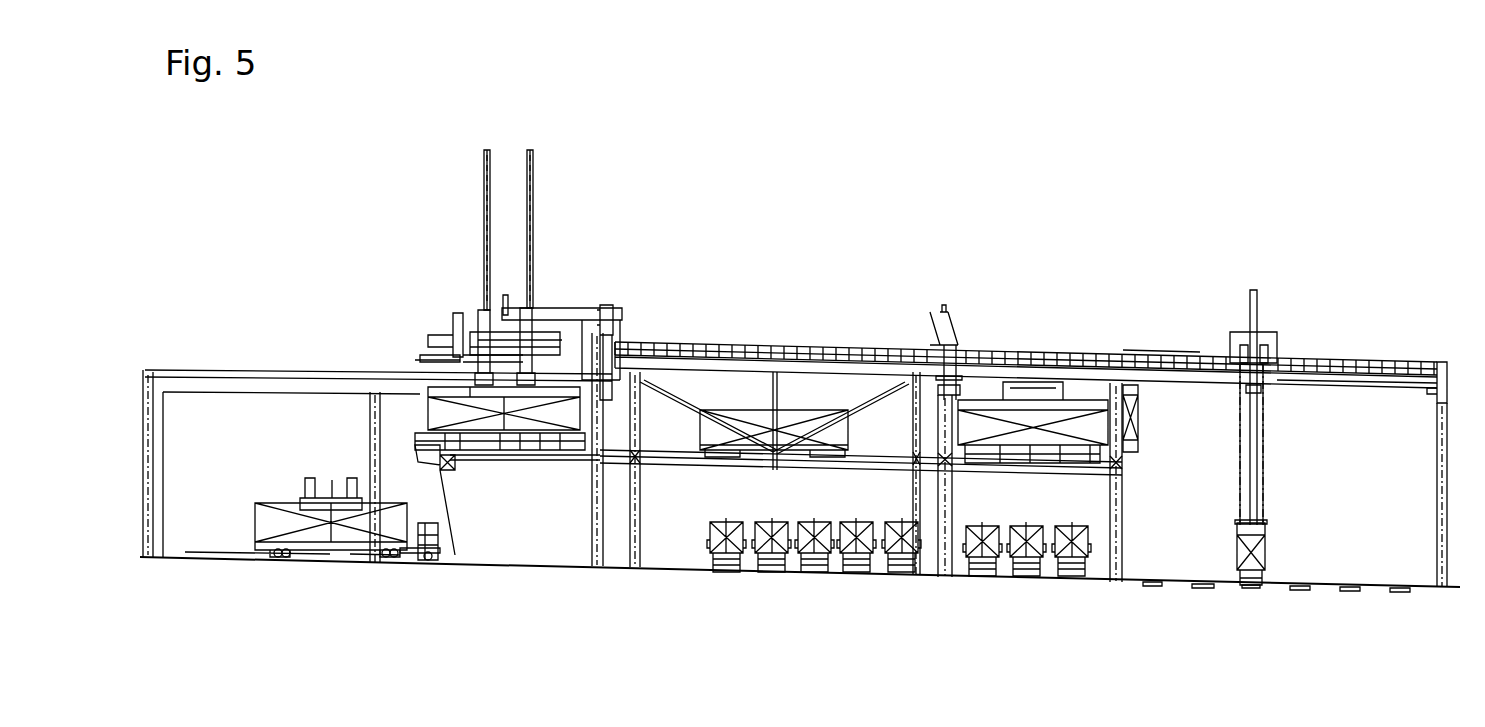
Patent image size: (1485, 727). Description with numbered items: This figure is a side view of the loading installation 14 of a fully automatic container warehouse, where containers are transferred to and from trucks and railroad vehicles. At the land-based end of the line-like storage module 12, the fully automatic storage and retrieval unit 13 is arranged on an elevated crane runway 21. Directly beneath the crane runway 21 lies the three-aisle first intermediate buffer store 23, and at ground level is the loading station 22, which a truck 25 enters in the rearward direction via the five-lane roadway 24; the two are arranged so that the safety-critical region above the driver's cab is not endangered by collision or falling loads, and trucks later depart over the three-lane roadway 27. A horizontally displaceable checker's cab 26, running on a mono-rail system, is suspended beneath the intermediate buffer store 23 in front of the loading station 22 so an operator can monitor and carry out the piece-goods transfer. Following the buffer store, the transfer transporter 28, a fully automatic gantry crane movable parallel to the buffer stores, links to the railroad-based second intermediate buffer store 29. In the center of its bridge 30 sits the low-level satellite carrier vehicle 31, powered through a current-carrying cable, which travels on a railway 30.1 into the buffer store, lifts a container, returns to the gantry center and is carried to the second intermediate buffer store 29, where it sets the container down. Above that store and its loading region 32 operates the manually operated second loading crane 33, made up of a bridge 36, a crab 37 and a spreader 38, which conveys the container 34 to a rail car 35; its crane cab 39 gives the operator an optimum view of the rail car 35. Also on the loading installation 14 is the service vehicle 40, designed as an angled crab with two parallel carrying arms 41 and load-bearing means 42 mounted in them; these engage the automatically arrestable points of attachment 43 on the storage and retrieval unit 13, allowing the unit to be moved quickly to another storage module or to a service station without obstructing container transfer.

The storage module 12 is at (156, 358).
The storage and retrieval unit 13 is at (426, 353).
The loading installation 14 is at (708, 196).
The crane runway 21 is at (263, 370).
The loading station 22 is at (223, 560).
The first intermediate buffer store 23 is at (522, 443).
The roadway 24 is at (777, 572).
The truck 25 is at (412, 555).
The checker's cab 26 is at (427, 467).
The three-lane roadway 27 is at (1053, 577).
The transfer transporter 28 is at (824, 337).
The second intermediate buffer store 29 is at (1077, 457).
The bridge 30 is at (787, 363).
The railway 30.1 is at (888, 457).
The satellite carrier vehicle 31 is at (722, 443).
The loading region 32 is at (1327, 588).
The second loading crane 33 is at (1127, 350).
The container 34 is at (1238, 563).
The rail car 35 is at (1257, 572).
The bridge 36 is at (1330, 380).
The crab 37 is at (1267, 340).
The spreader 38 is at (1240, 528).
The crane cab 39 is at (1132, 442).
The service vehicle 40 is at (621, 300).
The carrying arms 41 is at (562, 312).
The load-bearing means 42 is at (505, 297).
The points of attachment 43 is at (483, 340).